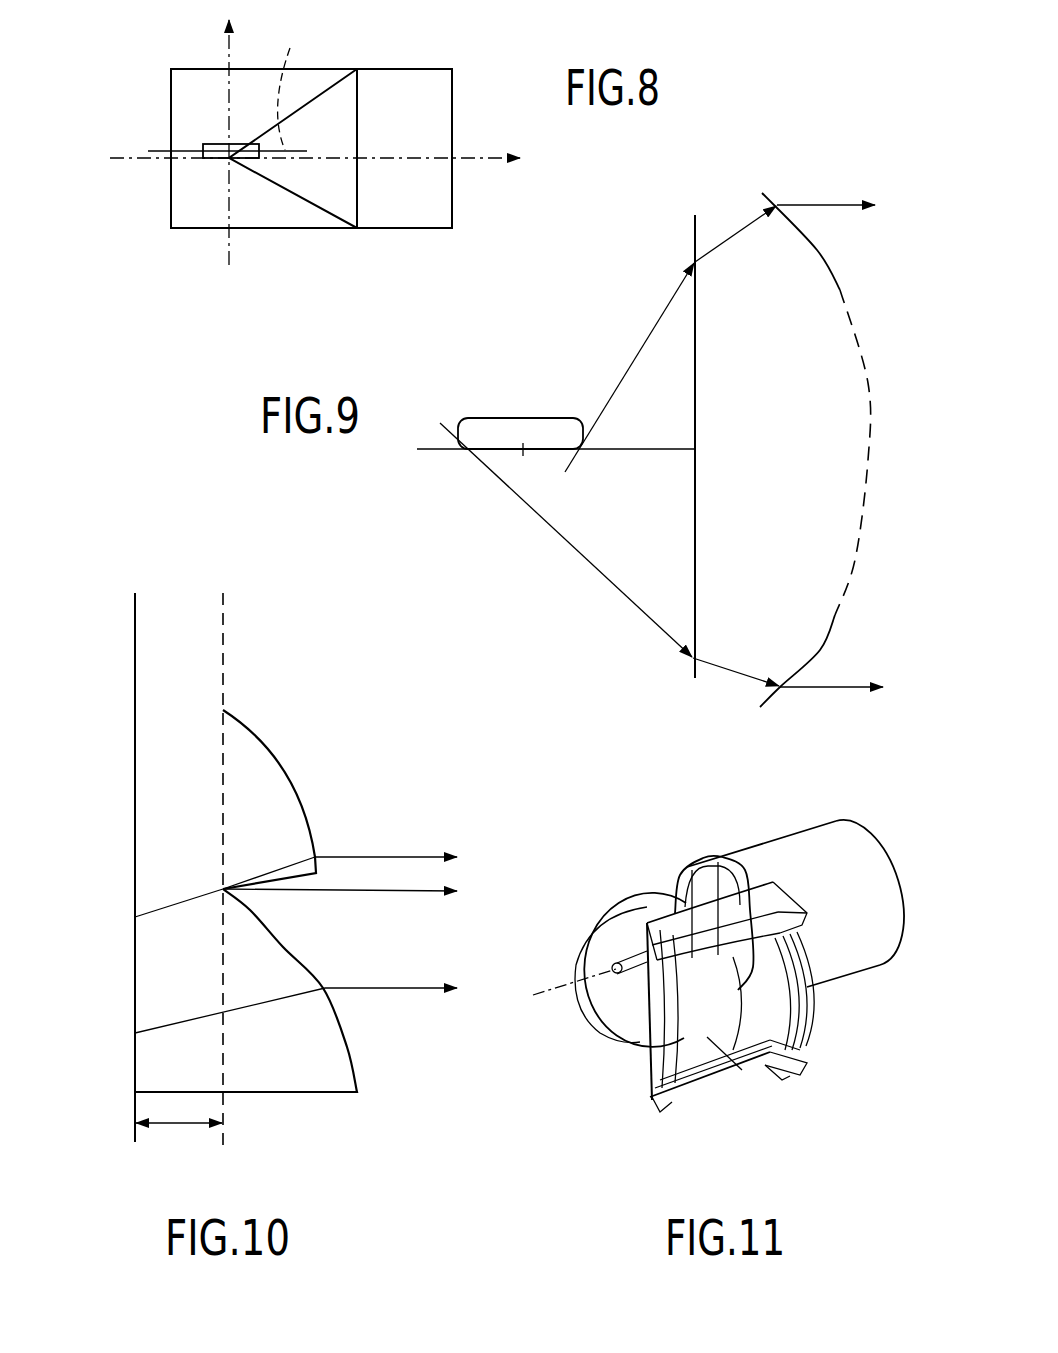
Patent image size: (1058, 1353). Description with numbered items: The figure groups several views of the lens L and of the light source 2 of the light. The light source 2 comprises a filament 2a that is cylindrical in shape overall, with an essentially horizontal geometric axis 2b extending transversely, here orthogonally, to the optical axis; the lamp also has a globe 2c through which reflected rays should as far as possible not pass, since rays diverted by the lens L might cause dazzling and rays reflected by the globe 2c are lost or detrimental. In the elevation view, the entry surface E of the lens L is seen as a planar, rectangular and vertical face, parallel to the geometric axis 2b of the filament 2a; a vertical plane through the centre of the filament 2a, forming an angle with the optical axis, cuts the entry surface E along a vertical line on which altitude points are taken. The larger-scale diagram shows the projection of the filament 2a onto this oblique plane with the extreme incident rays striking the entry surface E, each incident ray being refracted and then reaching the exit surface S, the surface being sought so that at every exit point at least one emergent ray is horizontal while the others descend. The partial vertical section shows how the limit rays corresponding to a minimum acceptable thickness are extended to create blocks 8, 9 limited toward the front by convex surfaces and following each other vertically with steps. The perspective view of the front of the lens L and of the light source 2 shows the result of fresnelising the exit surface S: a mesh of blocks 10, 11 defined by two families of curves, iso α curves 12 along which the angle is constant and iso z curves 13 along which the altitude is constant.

In FIG. 11, the light source 2 is at (709, 956).
In FIG. 8, the filament 2a is at (205, 143).
In FIG. 9, the filament 2a is at (528, 418).
In FIG. 11, the filament 2a is at (628, 1038).
In FIG. 8, the geometric axis 2b is at (291, 84).
In FIG. 11, the geometric axis 2b is at (598, 972).
In FIG. 11, the globe 2c is at (627, 1040).
In FIG. 10, the block 8 is at (325, 1055).
In FIG. 10, the block 9 is at (280, 827).
In FIG. 11, the block 10 is at (713, 1080).
In FIG. 11, the block 11 is at (742, 1070).
In FIG. 11, the iso α curve 12 is at (722, 860).
In FIG. 11, the iso z curve 13 is at (685, 880).
In FIG. 10, the lens L is at (261, 891).
In FIG. 11, the lens L is at (766, 993).
In FIG. 8, the entry surface E is at (442, 97).
In FIG. 9, the entry surface E is at (693, 244).
In FIG. 10, the entry surface E is at (135, 695).
In FIG. 9, the exit surface S is at (824, 253).